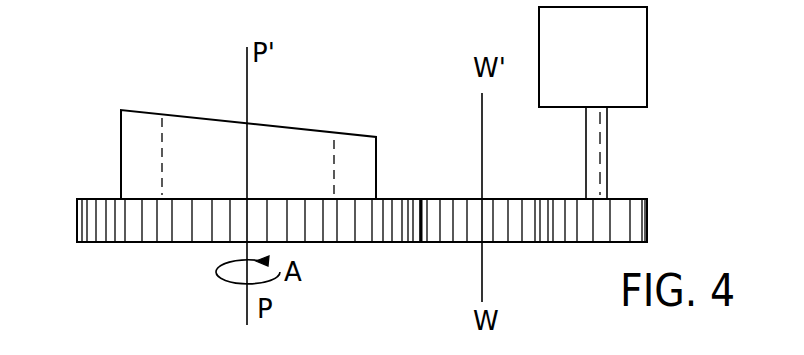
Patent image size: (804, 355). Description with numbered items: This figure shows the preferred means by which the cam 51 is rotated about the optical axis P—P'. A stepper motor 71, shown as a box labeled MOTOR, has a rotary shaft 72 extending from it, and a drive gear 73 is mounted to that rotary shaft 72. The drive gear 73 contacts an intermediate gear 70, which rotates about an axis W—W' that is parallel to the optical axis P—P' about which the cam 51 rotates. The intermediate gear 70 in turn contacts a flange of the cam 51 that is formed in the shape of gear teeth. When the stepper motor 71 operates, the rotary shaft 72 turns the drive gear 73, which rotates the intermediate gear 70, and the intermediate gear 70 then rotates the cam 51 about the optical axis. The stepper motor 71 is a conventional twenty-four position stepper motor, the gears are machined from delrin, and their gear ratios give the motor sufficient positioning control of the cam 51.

The cam 51 is at (121, 150).
The intermediate gear 70 is at (500, 198).
The stepper motor 71 is at (648, 62).
The rotary shaft 72 is at (608, 163).
The drive gear 73 is at (650, 215).